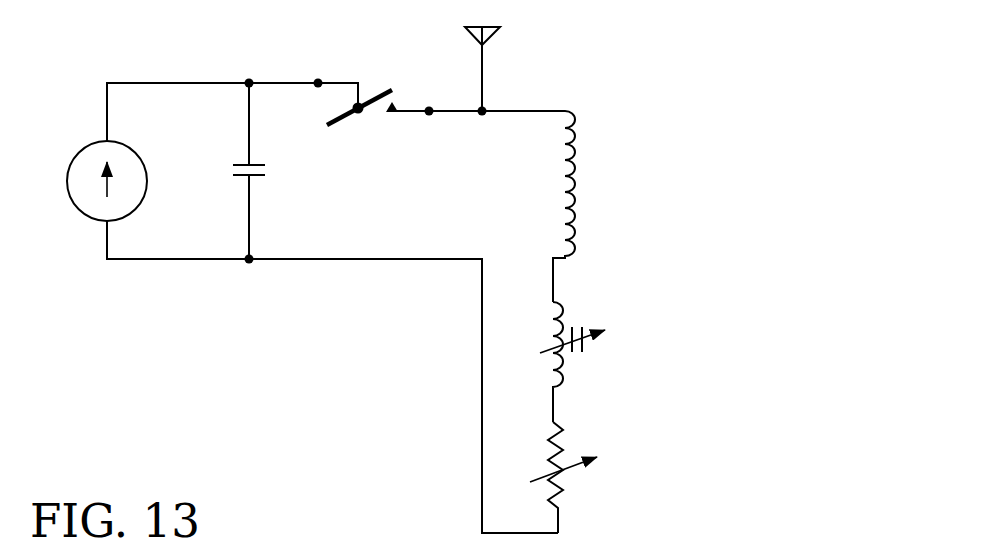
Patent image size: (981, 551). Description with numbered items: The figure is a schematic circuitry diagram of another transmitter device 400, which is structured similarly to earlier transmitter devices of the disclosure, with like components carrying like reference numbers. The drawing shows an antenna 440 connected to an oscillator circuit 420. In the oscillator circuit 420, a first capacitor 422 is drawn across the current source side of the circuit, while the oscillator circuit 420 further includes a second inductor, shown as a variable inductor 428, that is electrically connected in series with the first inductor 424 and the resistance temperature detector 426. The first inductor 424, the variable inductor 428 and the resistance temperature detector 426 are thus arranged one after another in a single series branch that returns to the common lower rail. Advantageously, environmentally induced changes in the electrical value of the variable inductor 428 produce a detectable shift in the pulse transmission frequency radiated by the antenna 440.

The transmitter device 400 is at (729, 92).
The oscillator circuit 420 is at (718, 380).
The first capacitor 422 is at (272, 177).
The first inductor 424 is at (582, 157).
The resistance temperature detector 426 is at (579, 480).
The variable inductor 428 is at (592, 355).
The antenna 440 is at (497, 38).